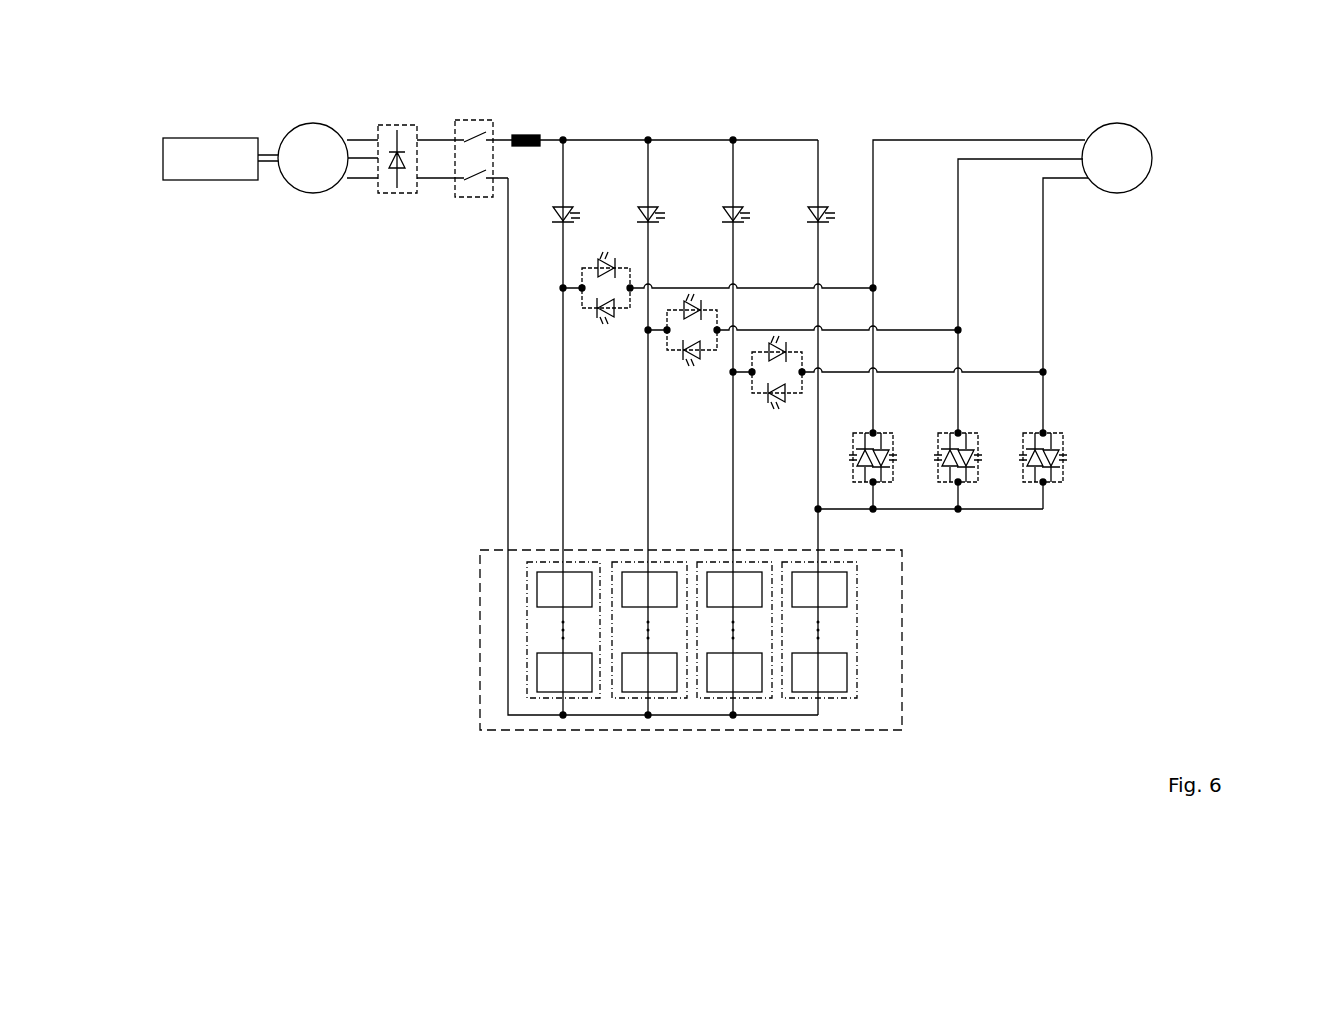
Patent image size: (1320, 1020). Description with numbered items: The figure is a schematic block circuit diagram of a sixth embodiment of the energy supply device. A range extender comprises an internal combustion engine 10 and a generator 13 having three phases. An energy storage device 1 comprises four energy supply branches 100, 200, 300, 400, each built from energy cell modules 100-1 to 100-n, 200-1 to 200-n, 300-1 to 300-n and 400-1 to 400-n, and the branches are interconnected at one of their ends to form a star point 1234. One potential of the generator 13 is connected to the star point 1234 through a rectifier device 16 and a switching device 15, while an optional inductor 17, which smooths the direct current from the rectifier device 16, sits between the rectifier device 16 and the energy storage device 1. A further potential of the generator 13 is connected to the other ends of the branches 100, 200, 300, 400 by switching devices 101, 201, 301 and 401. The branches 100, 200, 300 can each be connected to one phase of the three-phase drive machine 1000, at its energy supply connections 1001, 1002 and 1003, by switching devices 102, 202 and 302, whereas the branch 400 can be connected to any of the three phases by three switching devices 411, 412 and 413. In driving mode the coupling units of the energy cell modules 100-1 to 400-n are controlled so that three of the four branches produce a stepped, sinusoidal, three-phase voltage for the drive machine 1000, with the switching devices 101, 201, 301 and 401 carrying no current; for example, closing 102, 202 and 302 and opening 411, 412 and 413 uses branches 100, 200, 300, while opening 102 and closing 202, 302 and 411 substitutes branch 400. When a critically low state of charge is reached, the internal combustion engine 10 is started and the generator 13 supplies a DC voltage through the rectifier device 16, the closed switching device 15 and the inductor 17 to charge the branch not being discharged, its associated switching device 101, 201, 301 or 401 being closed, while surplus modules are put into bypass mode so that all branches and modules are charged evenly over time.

The energy storage device 1 is at (480, 628).
The internal combustion engine 10 is at (212, 138).
The generator 13 is at (313, 123).
The switching device 15 is at (478, 197).
The rectifier device 16 is at (397, 194).
The inductor 17 is at (526, 135).
The switching device 101 is at (572, 206).
The switching device 201 is at (657, 206).
The switching device 301 is at (742, 206).
The switching device 401 is at (827, 206).
The switching device 102 is at (603, 336).
The switching device 202 is at (690, 379).
The switching device 302 is at (776, 421).
The switching device 411 is at (900, 437).
The switching device 412 is at (985, 437).
The switching device 413 is at (1070, 437).
The drive machine 1000 is at (1152, 158).
The energy supply connection 1001 is at (875, 287).
The energy supply connection 1002 is at (960, 329).
The energy supply connection 1003 is at (1045, 371).
The energy supply branch 100 is at (505, 667).
The energy supply branch 200 is at (623, 641).
The energy supply branch 300 is at (733, 641).
The energy supply branch 400 is at (877, 667).
The energy cell module 100-n is at (537, 590).
The energy cell module 100-1 is at (537, 674).
The energy cell module 200-n is at (626, 572).
The energy cell module 200-1 is at (641, 693).
The energy cell module 300-n is at (712, 572).
The energy cell module 300-1 is at (720, 693).
The energy cell module 400-n is at (847, 587).
The energy cell module 400-1 is at (847, 670).
The star point 1234 is at (692, 656).